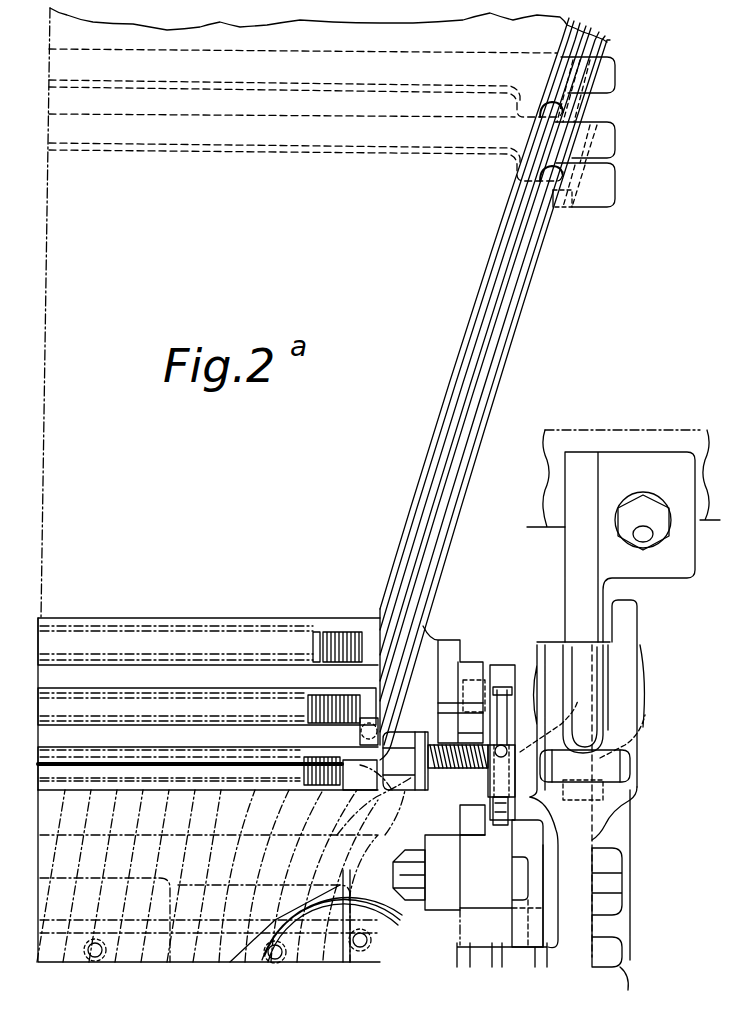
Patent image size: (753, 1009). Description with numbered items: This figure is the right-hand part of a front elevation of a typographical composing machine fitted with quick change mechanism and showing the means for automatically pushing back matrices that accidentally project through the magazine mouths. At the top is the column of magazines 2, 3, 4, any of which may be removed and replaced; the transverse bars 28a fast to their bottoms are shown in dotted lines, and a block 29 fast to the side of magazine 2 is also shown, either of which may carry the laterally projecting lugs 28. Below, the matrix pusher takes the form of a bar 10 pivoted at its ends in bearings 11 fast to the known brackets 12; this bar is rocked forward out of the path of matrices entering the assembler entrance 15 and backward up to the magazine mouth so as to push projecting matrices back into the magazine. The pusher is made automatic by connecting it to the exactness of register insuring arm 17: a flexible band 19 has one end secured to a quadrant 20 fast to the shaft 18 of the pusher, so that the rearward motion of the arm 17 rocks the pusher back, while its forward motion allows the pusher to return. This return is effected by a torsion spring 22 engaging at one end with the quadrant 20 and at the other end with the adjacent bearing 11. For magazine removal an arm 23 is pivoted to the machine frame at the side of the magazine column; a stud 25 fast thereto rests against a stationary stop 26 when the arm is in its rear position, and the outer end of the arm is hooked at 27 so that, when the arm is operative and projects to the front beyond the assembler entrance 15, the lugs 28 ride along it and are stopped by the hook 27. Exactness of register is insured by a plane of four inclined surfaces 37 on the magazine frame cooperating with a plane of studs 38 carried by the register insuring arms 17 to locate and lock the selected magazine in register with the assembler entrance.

The magazine 2 is at (205, 772).
The magazine 3 is at (566, 279).
The magazine 4 is at (550, 262).
The bar 10 is at (200, 772).
The bearing 11 is at (420, 790).
The bracket 12 is at (392, 832).
The assembler entrance 15 is at (219, 876).
The exactness of register insuring arm 17 is at (505, 674).
The shaft 18 is at (373, 762).
The flexible band 19 is at (505, 790).
The quadrant 20 is at (515, 757).
The torsion spring 22 is at (443, 742).
The arm 23 is at (580, 690).
The stud 25 is at (622, 770).
The stationary stop 26 is at (640, 620).
The hook 27 is at (587, 668).
The lug 28 is at (608, 190).
The transverse bar 28a is at (378, 86).
The block 29 is at (567, 207).
The inclined surface 37 is at (468, 718).
The stud 38 is at (482, 662).